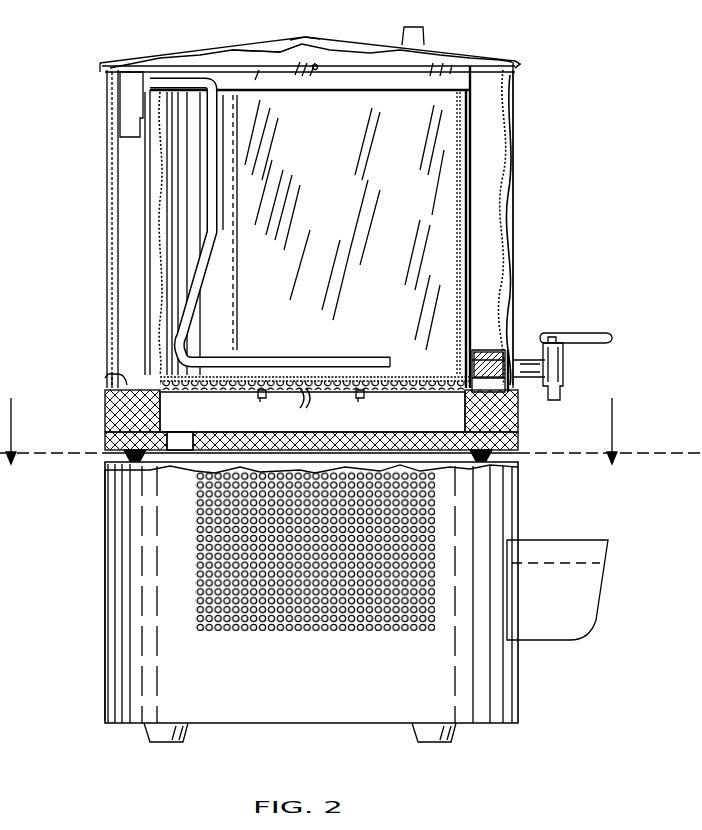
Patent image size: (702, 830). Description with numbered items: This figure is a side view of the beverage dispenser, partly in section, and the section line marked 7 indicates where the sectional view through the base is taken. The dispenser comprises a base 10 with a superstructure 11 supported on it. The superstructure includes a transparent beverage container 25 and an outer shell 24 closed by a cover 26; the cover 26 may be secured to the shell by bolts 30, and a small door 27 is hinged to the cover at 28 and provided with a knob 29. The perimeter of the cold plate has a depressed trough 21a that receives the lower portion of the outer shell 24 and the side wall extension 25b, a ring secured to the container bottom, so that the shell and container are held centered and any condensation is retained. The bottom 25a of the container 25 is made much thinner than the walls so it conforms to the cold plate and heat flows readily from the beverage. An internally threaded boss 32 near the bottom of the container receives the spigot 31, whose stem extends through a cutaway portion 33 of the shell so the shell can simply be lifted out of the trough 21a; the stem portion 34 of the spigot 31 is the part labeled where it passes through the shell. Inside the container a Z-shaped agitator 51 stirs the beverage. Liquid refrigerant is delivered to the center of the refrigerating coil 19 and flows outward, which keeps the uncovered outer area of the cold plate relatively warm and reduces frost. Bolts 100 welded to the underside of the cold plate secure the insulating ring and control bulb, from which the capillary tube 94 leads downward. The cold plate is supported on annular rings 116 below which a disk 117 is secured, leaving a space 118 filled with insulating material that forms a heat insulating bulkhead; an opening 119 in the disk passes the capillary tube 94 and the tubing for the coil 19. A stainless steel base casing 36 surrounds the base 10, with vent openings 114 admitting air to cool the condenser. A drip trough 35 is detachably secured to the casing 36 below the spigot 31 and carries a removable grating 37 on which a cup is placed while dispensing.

The section line 7- 7 is at (350, 421).
The base 10 is at (82, 530).
The superstructure 11 is at (66, 240).
The refrigerating coil 19 is at (436, 392).
The trough 21a is at (108, 372).
The outer shell 24 is at (517, 238).
The beverage container 25 is at (276, 92).
The bottom 25a is at (422, 378).
The side wall extension 25b is at (160, 392).
The cover 26 is at (462, 53).
The small door 27 is at (346, 47).
The hinge 28 is at (300, 40).
The knob 29 is at (423, 28).
The bolts 30 is at (521, 63).
The spigot 31 is at (564, 372).
The internally threaded boss 32 is at (475, 348).
The cutaway portion 33 is at (517, 348).
The nipple 34 is at (524, 380).
The drip trough 35 is at (585, 540).
The base casing 36 is at (104, 604).
The removable grating 37 is at (540, 562).
The agitator 51 is at (208, 283).
The capillary tube 94 is at (312, 398).
The bolts 100 is at (262, 394).
The vent openings 114 is at (345, 630).
The annular rings 116 is at (468, 411).
The disk 117 is at (365, 432).
The space 118 is at (312, 412).
The opening 119 is at (185, 432).